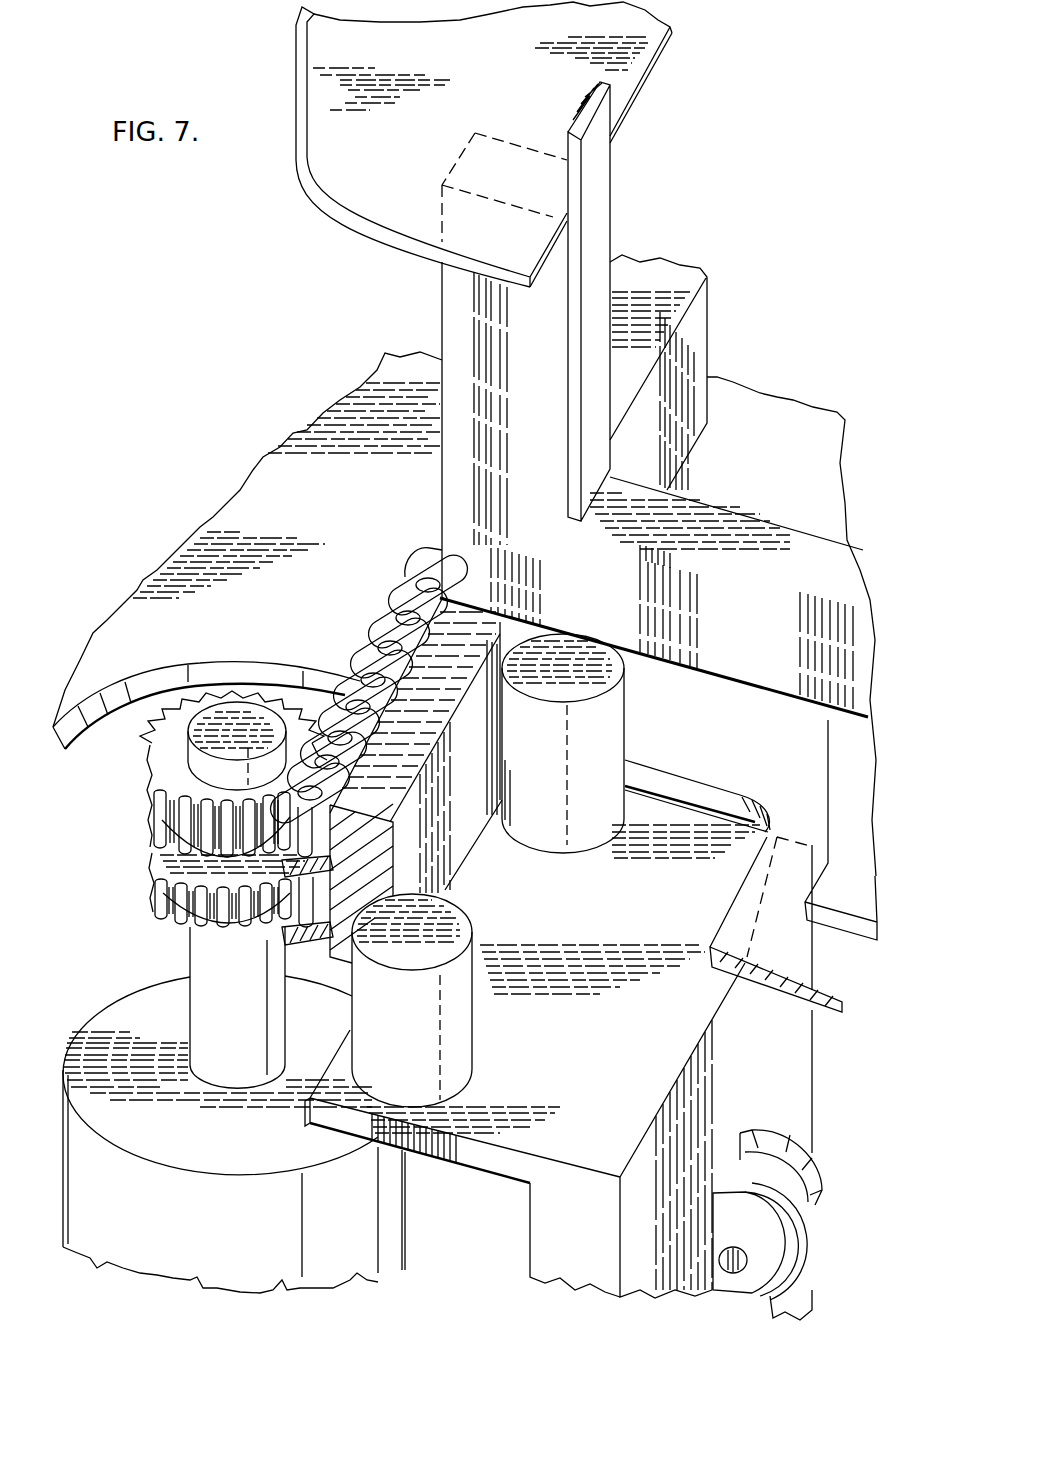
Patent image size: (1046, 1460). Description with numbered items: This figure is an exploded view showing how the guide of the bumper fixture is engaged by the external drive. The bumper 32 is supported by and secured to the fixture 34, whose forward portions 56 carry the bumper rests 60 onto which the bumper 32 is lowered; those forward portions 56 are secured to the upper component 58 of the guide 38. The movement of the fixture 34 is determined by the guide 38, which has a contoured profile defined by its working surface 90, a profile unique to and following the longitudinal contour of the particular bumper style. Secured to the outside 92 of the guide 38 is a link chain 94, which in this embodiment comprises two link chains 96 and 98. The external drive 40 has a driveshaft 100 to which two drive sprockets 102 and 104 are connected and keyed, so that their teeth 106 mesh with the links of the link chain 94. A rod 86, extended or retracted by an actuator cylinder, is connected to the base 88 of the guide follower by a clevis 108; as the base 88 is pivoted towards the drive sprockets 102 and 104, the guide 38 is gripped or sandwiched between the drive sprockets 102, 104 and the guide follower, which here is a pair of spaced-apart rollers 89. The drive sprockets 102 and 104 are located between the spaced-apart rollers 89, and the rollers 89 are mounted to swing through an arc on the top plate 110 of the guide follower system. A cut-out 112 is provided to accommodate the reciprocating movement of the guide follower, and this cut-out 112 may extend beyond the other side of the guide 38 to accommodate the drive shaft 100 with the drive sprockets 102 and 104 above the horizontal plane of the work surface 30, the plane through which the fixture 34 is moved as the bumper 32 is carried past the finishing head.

The work surface 30 is at (275, 505).
The bumper 32 is at (652, 81).
The fixture 34 is at (726, 532).
The guide 38 is at (478, 856).
The external drive 40 is at (168, 1213).
The forward portions 56 is at (455, 567).
The upper component 58 is at (433, 657).
The bumper rests 60 is at (507, 157).
The rod 86 is at (790, 1305).
The base 88 is at (775, 1088).
The rollers 89 is at (626, 722).
The working surface 90 is at (441, 775).
The outside 92 is at (345, 810).
The link chain 94 is at (345, 655).
The link chain 96 is at (307, 838).
The link chain 98 is at (303, 912).
The driveshaft 100 is at (203, 978).
The drive sprocket 102 is at (146, 788).
The drive sprocket 104 is at (146, 858).
The teeth 106 is at (175, 700).
The clevis 108 is at (808, 1165).
The top plate 110 is at (513, 1133).
The cut-out 112 is at (80, 692).